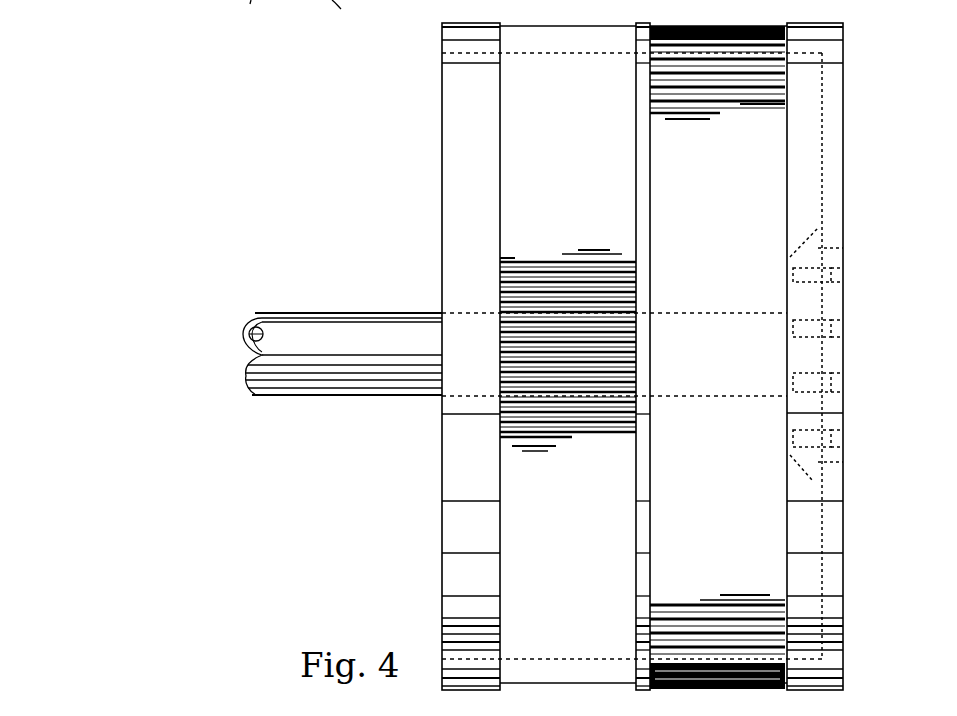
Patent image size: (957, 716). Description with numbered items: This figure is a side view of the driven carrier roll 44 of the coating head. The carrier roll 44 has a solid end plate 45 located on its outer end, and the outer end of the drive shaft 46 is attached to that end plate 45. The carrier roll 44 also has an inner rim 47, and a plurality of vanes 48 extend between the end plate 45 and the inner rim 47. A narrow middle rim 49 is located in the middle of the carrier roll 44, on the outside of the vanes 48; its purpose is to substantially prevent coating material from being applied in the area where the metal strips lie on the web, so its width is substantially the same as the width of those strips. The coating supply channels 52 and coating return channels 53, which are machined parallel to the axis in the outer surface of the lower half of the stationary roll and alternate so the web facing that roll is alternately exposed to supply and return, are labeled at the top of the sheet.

The driven carrier roll 44 is at (376, 130).
The solid end plate 45 is at (830, 163).
The drive shaft 46 is at (405, 318).
The inner rim 47 is at (445, 236).
The vanes 48 is at (607, 248).
The middle rim 49 is at (641, 23).
The coating supply channels 52 is at (338, 16).
The coating return channels 53 is at (248, 16).